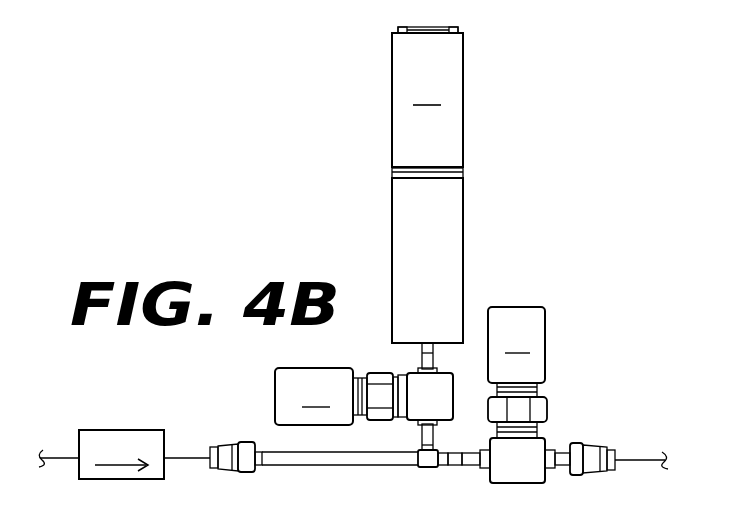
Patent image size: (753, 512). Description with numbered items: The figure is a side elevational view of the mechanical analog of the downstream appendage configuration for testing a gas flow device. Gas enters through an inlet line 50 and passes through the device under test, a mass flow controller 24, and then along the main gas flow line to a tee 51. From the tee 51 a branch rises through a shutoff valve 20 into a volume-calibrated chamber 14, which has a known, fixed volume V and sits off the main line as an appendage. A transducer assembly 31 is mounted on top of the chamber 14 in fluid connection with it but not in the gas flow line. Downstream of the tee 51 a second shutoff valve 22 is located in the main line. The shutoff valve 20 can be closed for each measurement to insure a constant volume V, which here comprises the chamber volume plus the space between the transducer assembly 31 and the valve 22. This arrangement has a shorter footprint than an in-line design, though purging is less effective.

The transducer assembly 31 is at (463, 88).
The chamber 14 is at (463, 227).
The shutoff valve 22 is at (517, 395).
The shutoff valve 20 is at (336, 396).
The mass flow controller 24 is at (131, 430).
The inlet gas line 50 is at (47, 455).
The tee 51 is at (428, 466).